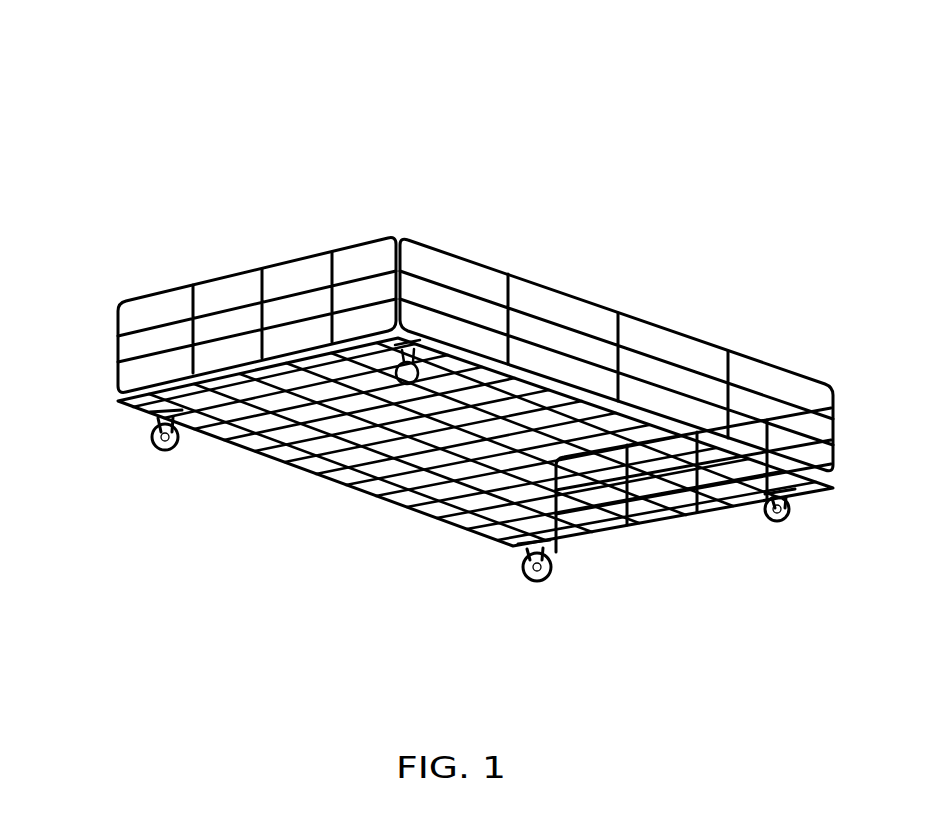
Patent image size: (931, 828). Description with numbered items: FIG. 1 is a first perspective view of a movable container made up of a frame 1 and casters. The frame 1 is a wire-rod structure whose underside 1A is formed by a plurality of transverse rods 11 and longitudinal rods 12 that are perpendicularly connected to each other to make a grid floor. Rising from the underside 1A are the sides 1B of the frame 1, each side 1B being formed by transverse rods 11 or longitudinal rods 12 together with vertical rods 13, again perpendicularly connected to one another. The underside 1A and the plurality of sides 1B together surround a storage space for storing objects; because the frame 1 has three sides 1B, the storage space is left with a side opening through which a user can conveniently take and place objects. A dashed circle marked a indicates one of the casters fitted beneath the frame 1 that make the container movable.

The frame 1 is at (325, 72).
The underside 1A is at (242, 147).
The side 1B is at (408, 147).
The transverse rod 11 is at (243, 388).
The longitudinal rod 12 is at (297, 430).
The vertical rod 13 is at (510, 278).
The caster wheel a is at (135, 460).